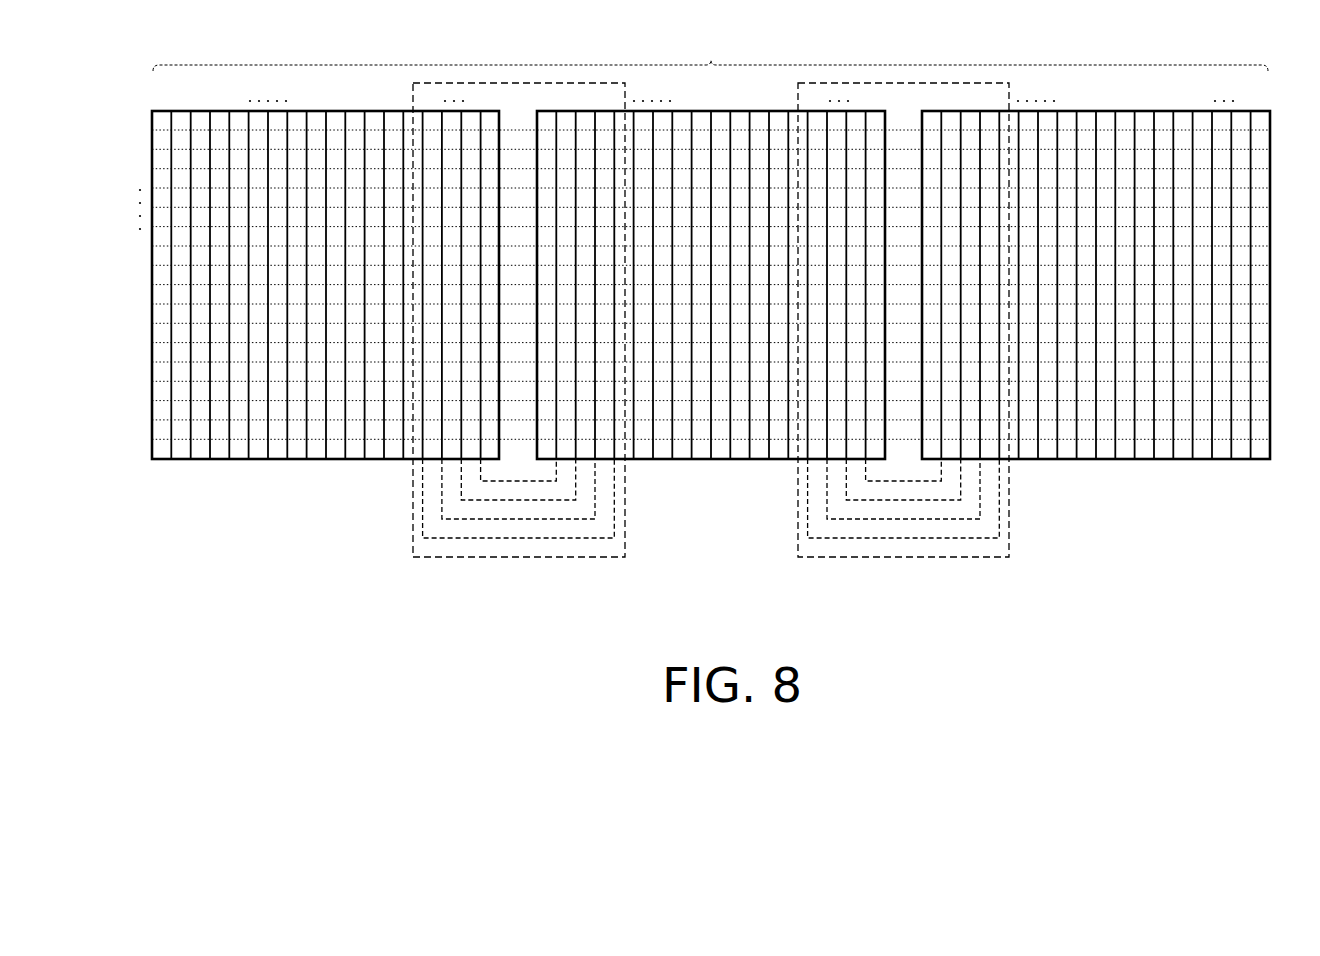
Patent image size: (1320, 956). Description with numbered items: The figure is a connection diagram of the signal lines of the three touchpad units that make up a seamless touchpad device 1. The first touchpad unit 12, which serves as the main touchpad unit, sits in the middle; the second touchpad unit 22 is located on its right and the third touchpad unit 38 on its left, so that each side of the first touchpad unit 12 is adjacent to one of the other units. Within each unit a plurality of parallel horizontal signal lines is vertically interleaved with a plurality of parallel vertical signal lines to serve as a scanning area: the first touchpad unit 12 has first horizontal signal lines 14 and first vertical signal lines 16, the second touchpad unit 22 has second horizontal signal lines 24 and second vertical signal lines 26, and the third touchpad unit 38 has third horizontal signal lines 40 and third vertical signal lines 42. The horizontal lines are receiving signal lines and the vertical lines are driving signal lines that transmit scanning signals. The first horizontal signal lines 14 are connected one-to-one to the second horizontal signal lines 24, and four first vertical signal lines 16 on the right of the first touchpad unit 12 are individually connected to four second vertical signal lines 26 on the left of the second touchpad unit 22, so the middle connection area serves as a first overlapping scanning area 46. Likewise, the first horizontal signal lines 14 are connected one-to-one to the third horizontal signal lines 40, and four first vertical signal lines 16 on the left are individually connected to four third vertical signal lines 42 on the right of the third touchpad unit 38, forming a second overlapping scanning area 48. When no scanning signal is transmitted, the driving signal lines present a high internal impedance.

The seamless touchpad device 1 is at (710, 54).
The third touchpad unit 38 is at (160, 460).
The third horizontal signal lines 40 is at (240, 440).
The third vertical signal lines 42 is at (199, 460).
The first touchpad unit 12 is at (660, 460).
The first horizontal signal lines 14 is at (745, 442).
The first vertical signal lines 16 is at (708, 447).
The second touchpad unit 22 is at (1262, 460).
The second horizontal signal lines 24 is at (1223, 440).
The second vertical signal lines 26 is at (1188, 460).
The second overlapping scanning area 48 is at (530, 558).
The first overlapping scanning area 46 is at (916, 558).